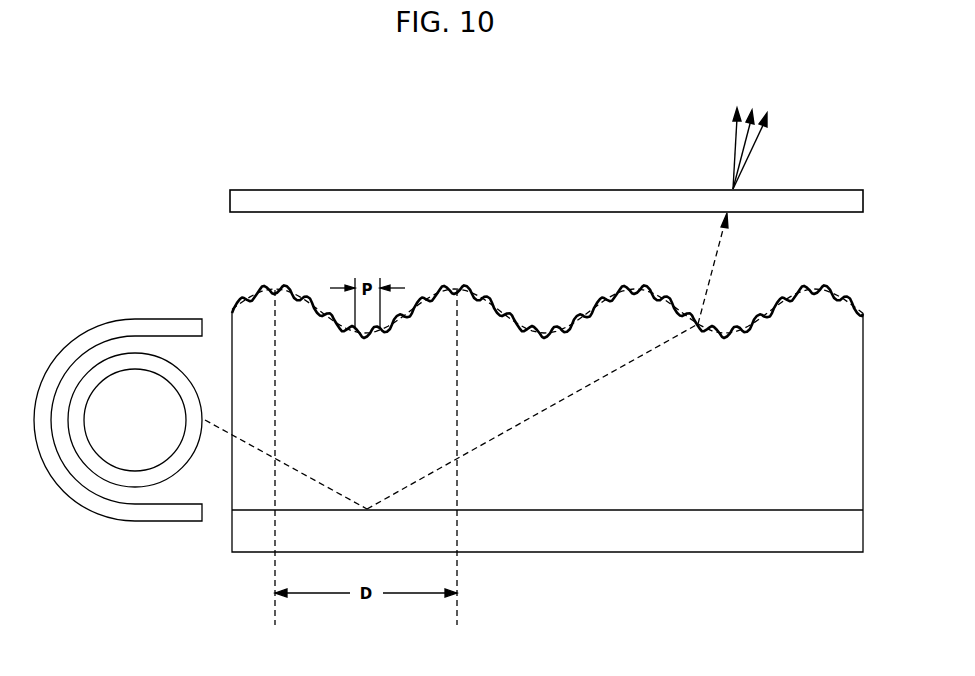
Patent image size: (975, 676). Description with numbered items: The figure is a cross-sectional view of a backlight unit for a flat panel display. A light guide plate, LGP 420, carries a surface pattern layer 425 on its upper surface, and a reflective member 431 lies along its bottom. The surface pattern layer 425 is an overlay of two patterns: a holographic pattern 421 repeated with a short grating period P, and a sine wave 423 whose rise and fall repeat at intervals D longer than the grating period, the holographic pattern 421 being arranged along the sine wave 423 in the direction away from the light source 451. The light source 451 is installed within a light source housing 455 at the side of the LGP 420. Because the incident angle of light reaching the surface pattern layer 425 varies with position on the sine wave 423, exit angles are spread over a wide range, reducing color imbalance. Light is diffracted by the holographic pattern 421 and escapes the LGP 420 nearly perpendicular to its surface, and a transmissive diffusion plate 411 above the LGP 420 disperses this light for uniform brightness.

The transmissive diffusion plate 411 is at (540, 200).
The LGP 420 is at (733, 495).
The holographic pattern 421 is at (284, 288).
The sine wave 423 is at (250, 290).
The surface pattern layer 425 is at (141, 247).
The reflective member 431 is at (815, 543).
The light source 451 is at (135, 478).
The light source housing 455 is at (165, 510).